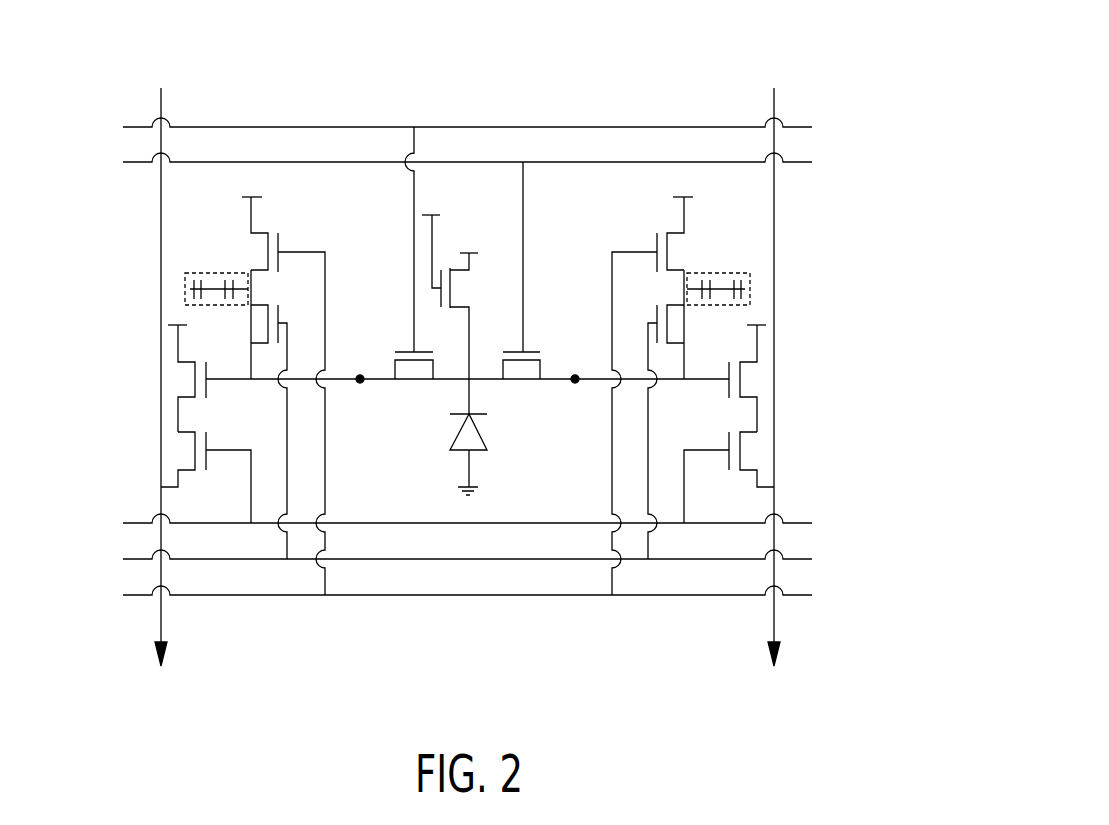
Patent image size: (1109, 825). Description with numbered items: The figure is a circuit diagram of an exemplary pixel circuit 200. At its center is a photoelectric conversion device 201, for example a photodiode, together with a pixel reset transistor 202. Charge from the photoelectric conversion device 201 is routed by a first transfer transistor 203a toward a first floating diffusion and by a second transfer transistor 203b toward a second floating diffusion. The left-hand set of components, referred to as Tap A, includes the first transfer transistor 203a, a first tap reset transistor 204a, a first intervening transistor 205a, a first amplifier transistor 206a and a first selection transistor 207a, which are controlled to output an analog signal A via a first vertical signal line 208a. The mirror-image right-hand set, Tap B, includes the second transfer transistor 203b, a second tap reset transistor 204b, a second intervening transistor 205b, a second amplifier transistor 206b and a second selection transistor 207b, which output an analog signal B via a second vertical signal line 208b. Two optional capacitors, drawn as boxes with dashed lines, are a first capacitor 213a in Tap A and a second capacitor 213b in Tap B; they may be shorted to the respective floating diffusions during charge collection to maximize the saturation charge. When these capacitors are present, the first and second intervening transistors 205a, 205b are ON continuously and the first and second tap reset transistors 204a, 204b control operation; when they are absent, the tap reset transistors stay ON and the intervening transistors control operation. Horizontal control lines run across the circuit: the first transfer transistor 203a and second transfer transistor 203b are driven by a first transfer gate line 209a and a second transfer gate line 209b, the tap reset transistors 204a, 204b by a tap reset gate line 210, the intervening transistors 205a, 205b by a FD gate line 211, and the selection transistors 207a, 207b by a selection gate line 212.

The pixel circuit 200 is at (119, 66).
The photoelectric conversion device 201 is at (458, 452).
The pixel reset transistor 202 is at (457, 265).
The first transfer transistor 203a is at (403, 350).
The second transfer transistor 203b is at (531, 350).
The first tap reset transistor 204a is at (250, 233).
The second tap reset transistor 204b is at (668, 235).
The first intervening transistor 205a is at (252, 312).
The second intervening transistor 205b is at (683, 312).
The first amplifier transistor 206a is at (195, 362).
The second amplifier transistor 206b is at (740, 362).
The first selection transistor 207a is at (195, 433).
The second selection transistor 207b is at (740, 433).
The first vertical signal line 208a is at (161, 627).
The second vertical signal line 208b is at (774, 627).
The first transfer gate line 209a is at (248, 126).
The second transfer gate line 209b is at (678, 161).
The tap reset gate line 210 is at (240, 596).
The FD gate line 211 is at (555, 560).
The selection gate line 212 is at (707, 524).
The first capacitor 213a is at (185, 281).
The second capacitor 213b is at (752, 280).